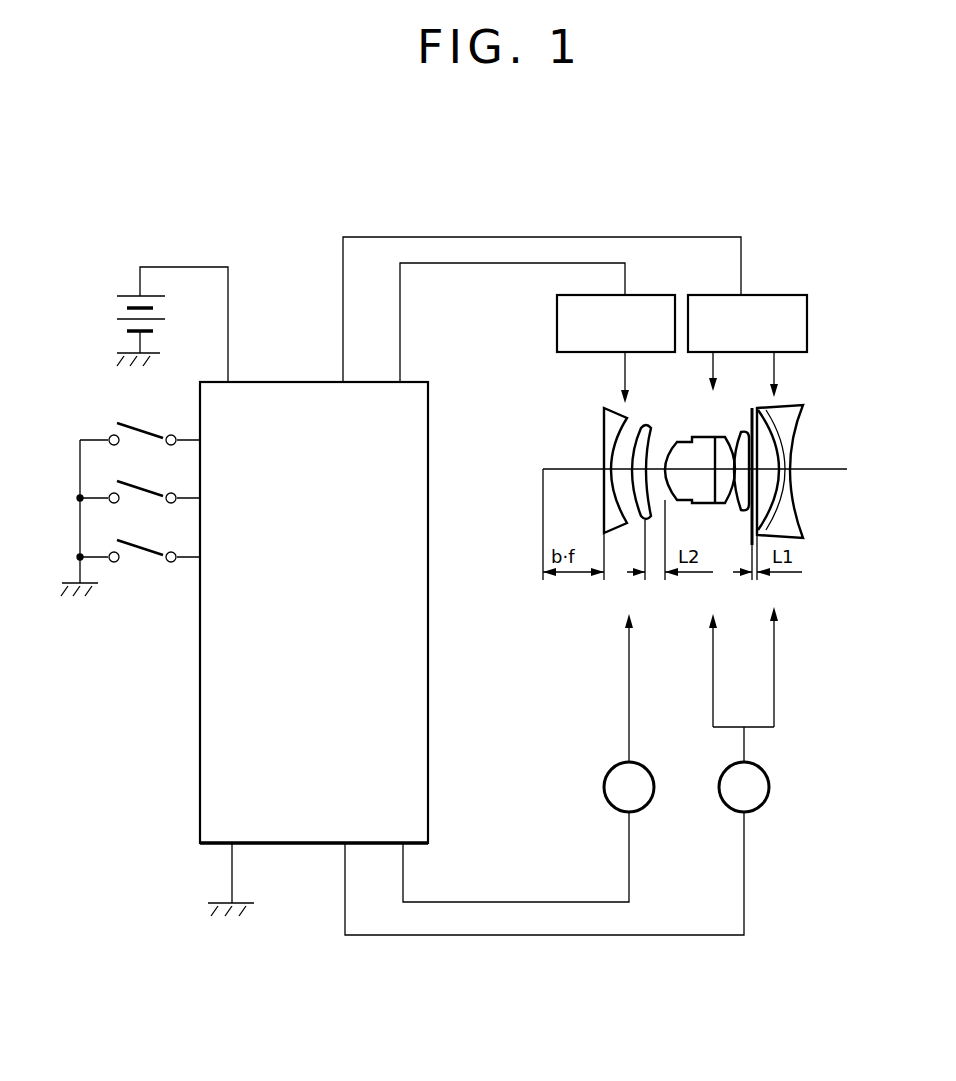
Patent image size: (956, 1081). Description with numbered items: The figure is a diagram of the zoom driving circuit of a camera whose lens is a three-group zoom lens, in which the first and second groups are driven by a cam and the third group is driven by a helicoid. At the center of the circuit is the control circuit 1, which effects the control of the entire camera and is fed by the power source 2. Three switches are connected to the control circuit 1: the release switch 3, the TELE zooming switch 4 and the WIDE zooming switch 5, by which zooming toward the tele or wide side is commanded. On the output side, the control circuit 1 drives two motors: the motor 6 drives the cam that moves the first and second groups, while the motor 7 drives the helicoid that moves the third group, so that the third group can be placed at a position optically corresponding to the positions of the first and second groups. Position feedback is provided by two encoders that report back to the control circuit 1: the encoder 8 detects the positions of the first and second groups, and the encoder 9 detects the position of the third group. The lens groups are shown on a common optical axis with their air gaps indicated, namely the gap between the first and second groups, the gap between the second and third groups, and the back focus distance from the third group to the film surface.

The control circuit 1 is at (428, 455).
The power source 2 is at (134, 296).
The release switch 3 is at (118, 422).
The TELE zooming switch 4 is at (118, 480).
The WIDE zooming switch 5 is at (118, 540).
The motor for driving a cam 6 is at (768, 776).
The motor for driving a helicoid 7 is at (653, 776).
The encoder for detecting the positions of the first and second groups 8 is at (807, 312).
The encoder for detecting the position of the third group 9 is at (557, 311).